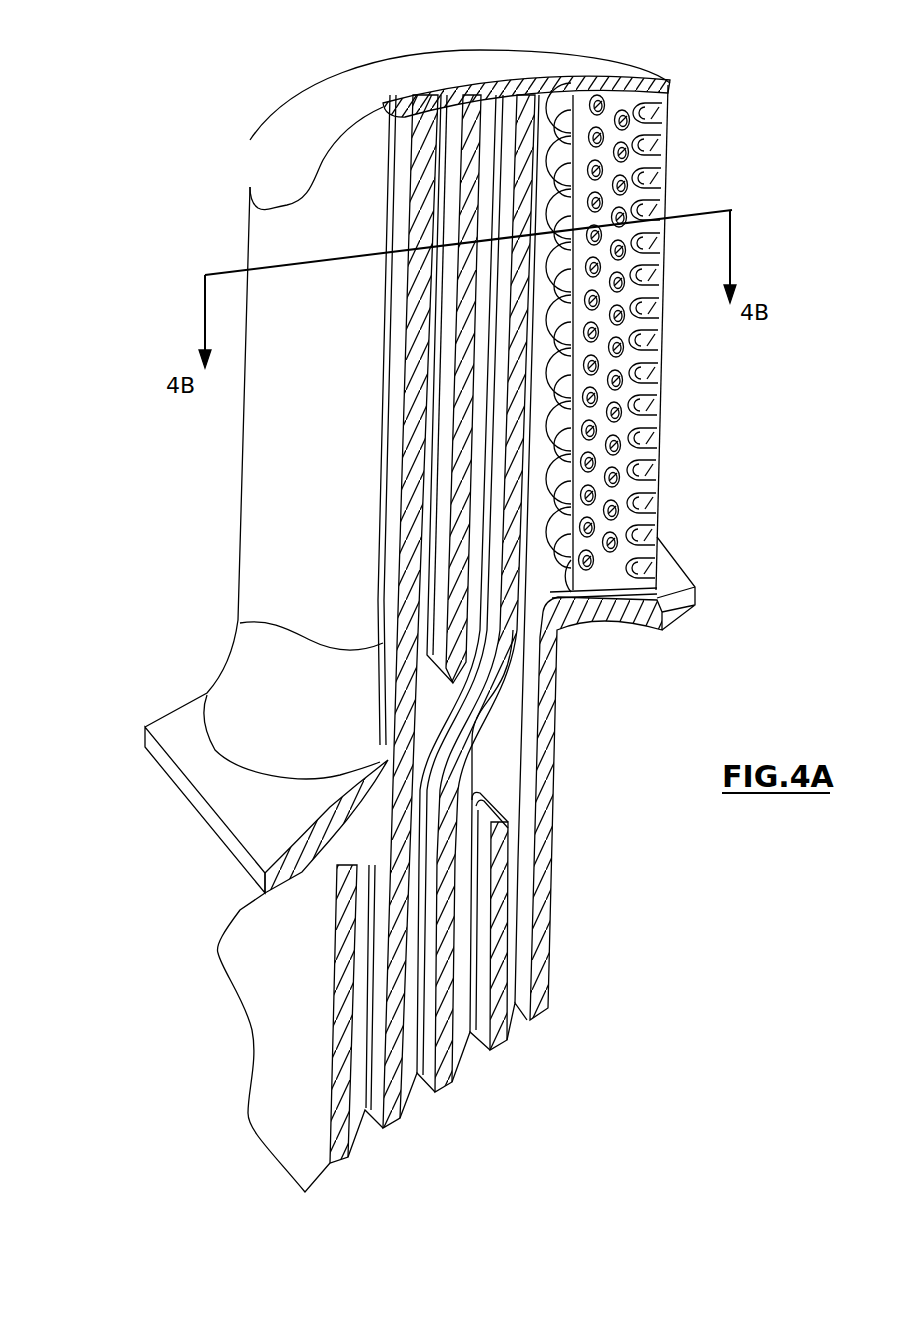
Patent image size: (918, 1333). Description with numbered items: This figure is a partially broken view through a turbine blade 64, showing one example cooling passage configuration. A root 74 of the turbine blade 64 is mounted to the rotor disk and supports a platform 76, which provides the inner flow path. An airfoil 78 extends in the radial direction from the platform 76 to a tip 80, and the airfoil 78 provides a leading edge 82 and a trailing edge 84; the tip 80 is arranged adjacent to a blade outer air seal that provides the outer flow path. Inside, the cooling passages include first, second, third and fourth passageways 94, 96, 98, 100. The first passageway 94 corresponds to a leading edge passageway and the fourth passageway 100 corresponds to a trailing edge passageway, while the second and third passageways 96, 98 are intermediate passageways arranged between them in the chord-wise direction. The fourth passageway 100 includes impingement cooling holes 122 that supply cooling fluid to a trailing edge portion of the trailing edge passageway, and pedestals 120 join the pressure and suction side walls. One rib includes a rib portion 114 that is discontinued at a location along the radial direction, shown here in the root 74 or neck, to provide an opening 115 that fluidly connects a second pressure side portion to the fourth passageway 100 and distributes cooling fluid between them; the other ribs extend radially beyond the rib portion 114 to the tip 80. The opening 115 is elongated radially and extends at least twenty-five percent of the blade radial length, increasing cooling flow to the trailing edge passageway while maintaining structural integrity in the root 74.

The turbine blade 64 is at (152, 436).
The root 74 is at (245, 958).
The platform 76 is at (247, 815).
The airfoil 78 is at (243, 477).
The tip 80 is at (300, 88).
The leading edge 82 is at (250, 188).
The trailing edge 84 is at (670, 88).
The first passageway 94 is at (366, 1130).
The second passageway 96 is at (418, 1092).
The third passageway 98 is at (472, 1050).
The fourth passageway 100 is at (517, 1025).
The rib portion 114 is at (506, 887).
The opening 115 is at (493, 763).
The pedestals 120 is at (593, 425).
The impingement cooling holes 122 is at (567, 320).